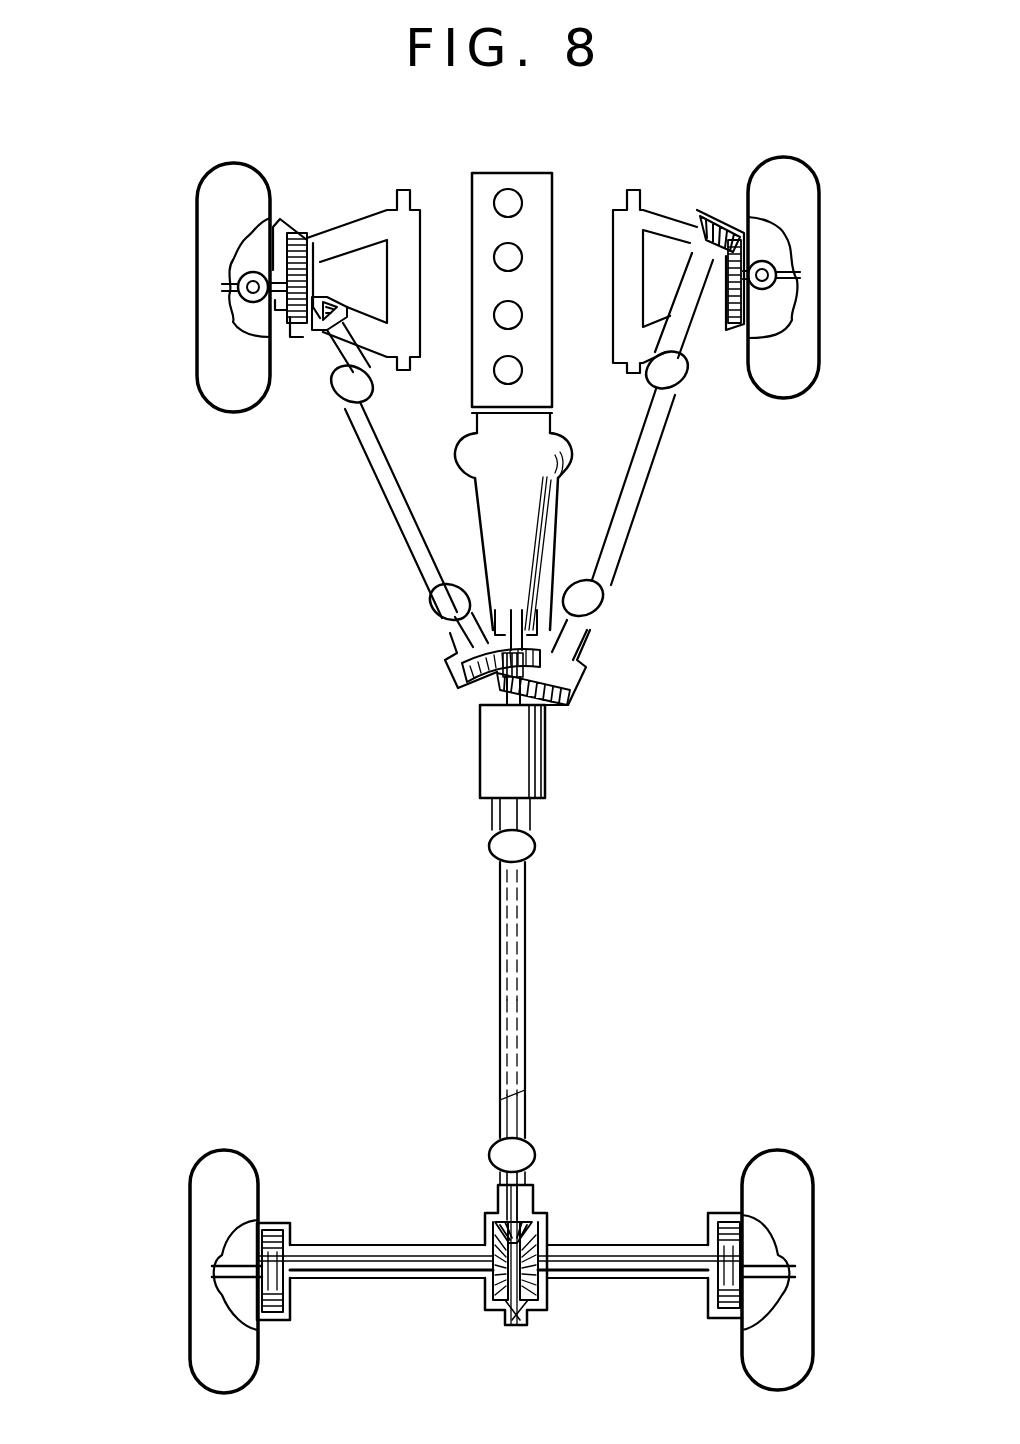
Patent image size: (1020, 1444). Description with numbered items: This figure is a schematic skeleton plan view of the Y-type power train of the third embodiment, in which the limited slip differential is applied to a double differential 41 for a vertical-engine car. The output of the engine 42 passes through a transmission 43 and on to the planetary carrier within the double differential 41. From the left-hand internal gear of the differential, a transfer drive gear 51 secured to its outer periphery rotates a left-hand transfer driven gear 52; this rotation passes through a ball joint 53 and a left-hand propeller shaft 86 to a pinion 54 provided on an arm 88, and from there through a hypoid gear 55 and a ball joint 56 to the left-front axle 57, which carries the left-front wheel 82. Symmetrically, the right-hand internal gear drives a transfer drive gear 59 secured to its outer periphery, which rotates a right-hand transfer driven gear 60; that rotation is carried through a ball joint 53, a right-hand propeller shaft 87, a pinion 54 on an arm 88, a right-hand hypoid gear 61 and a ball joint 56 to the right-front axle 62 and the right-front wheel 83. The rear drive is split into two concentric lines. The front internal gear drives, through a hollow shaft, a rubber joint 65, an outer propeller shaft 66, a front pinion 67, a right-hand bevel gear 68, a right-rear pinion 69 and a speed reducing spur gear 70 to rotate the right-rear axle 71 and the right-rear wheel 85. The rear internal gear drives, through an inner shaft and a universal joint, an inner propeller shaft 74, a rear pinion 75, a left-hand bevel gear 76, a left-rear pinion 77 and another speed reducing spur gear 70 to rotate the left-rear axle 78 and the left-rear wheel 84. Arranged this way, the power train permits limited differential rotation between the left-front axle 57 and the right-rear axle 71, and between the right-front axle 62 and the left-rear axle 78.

The double differential 41 is at (530, 787).
The engine 42 is at (533, 200).
The transmission 43 is at (570, 457).
The transfer drive gear 51 is at (497, 688).
The left-hand transfer driven gear 52 is at (457, 667).
The ball joint 53 is at (677, 373).
The pinion 54 is at (330, 312).
The hypoid gear 55 is at (296, 237).
The ball joint 56 is at (272, 333).
The left-front axle 57 is at (232, 287).
The transfer drive gear 59 is at (522, 668).
The right-hand transfer driven gear 60 is at (570, 700).
The right-hand hypoid gear 61 is at (733, 323).
The right-front axle 62 is at (778, 252).
The rubber joint 65 is at (520, 847).
The outer propeller shaft 66 is at (525, 900).
The front pinion 67 is at (527, 1222).
The right-hand bevel gear 68 is at (540, 1257).
The right-rear pinion 69 is at (727, 1220).
The speed reducing spur gear 70 is at (277, 1313).
The right-rear axle 71 is at (767, 1270).
The inner propeller shaft 74 is at (517, 1110).
The rear pinion 75 is at (530, 1310).
The left-hand bevel gear 76 is at (497, 1277).
The left-rear pinion 77 is at (270, 1267).
The left-rear axle 78 is at (217, 1275).
The left-front wheel 82 is at (237, 383).
The right-front wheel 83 is at (775, 377).
The left-rear wheel 84 is at (237, 1170).
The right-rear wheel 85 is at (780, 1153).
The left-hand propeller shaft 86 is at (392, 473).
The right-hand propeller shaft 87 is at (615, 517).
The arm 88 is at (375, 327).